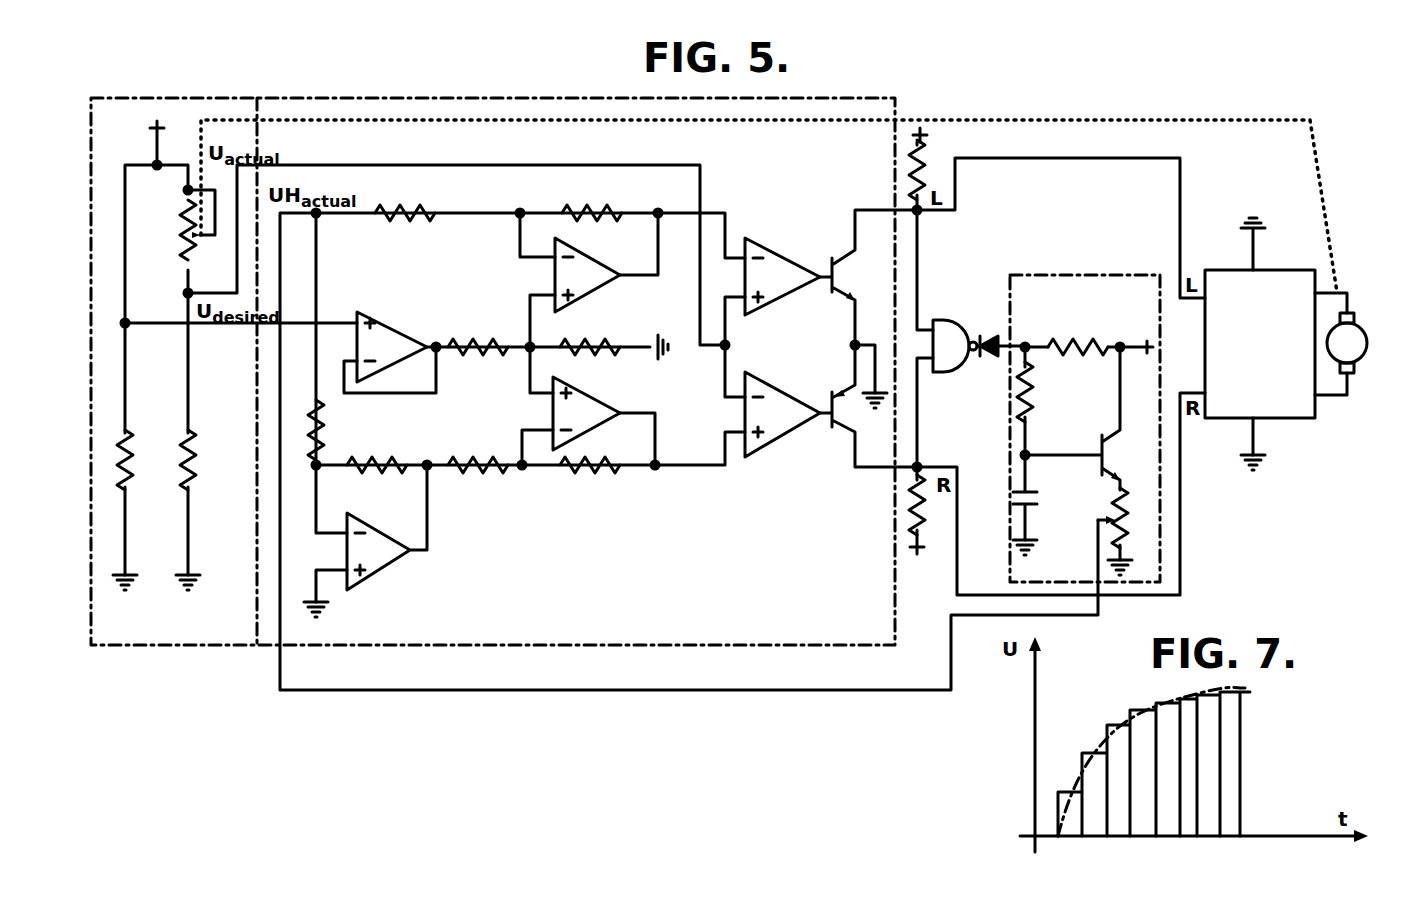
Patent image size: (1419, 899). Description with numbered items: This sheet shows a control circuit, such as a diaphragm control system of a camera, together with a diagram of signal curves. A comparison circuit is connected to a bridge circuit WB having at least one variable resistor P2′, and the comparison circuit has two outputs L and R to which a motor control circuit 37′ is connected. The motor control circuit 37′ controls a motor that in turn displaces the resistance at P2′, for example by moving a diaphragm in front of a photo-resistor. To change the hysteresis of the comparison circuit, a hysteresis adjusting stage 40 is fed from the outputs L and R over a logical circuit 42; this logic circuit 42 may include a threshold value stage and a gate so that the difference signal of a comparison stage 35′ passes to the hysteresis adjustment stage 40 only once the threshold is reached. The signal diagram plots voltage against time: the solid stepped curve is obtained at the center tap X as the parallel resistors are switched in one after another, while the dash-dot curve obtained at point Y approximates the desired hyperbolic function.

In FIG. 5, the bridge circuit WB is at (218, 652).
In FIG. 5, the variable resistor P2′ is at (182, 241).
In FIG. 5, the logical circuit 42 is at (961, 324).
In FIG. 5, the hysteresis adjusting stage 40 is at (1134, 274).
In FIG. 5, the motor control circuit 37′ is at (1260, 344).
In FIG. 5, the comparison stage 35′ is at (1366, 367).
In FIG. 7, the center tap X is at (1127, 683).
In FIG. 7, the point Y is at (1204, 699).